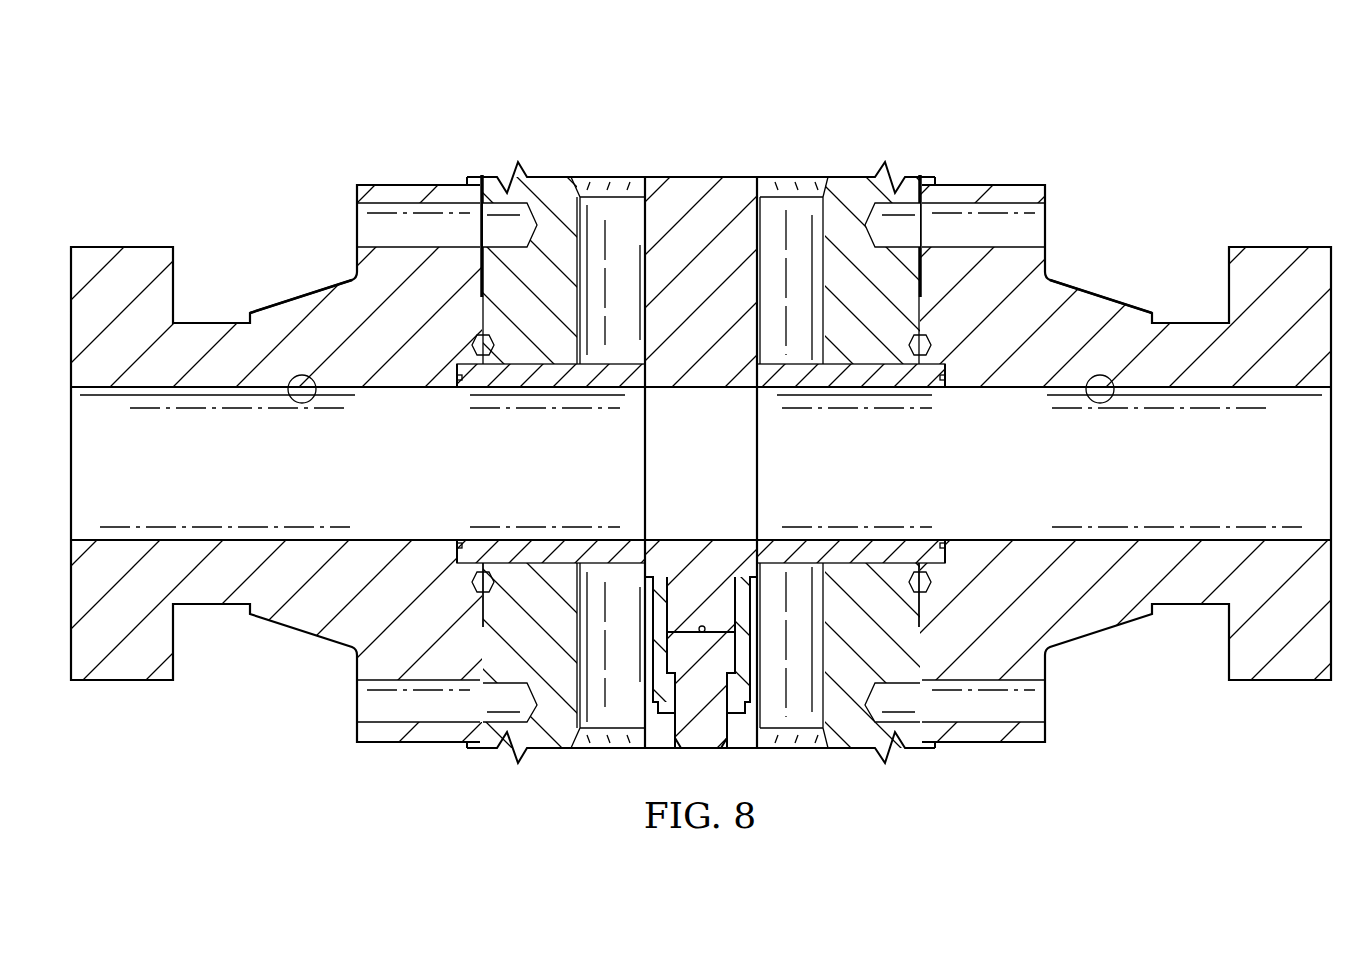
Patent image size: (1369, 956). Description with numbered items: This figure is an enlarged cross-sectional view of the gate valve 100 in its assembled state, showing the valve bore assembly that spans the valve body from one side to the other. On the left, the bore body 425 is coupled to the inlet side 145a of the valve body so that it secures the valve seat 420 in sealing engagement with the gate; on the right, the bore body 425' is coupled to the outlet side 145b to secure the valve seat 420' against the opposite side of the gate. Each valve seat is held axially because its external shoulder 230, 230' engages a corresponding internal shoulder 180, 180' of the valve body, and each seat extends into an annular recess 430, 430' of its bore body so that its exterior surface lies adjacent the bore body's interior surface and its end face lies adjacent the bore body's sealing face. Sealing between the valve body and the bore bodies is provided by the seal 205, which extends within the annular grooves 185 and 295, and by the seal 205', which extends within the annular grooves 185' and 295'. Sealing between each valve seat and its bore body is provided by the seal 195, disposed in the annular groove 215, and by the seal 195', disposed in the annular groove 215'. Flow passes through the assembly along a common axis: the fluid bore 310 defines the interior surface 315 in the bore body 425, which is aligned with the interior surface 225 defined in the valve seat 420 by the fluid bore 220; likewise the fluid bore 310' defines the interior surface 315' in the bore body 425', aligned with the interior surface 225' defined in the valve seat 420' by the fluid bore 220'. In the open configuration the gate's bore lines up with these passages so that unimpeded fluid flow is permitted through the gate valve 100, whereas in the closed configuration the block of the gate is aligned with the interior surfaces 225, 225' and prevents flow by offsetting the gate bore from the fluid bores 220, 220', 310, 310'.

The gate valve 100 is at (434, 104).
The inlet side 145a is at (472, 261).
The outlet side 145b is at (932, 275).
The internal shoulder 180 is at (551, 402).
The internal shoulder 180' is at (851, 402).
The annular groove 185 is at (510, 604).
The annular groove 185' is at (891, 604).
The seal 195 is at (412, 396).
The seal 195' is at (991, 396).
The seal 205 is at (443, 339).
The seal 205' is at (961, 339).
The annular groove 215 is at (414, 531).
The annular groove 215' is at (990, 531).
The fluid bore 220 is at (547, 461).
The fluid bore 220' is at (854, 461).
The interior surface 225 is at (551, 521).
The interior surface 225' is at (851, 521).
The external shoulder 230 is at (608, 462).
The external shoulder 230' is at (794, 462).
The annular groove 295 is at (438, 587).
The annular groove 295' is at (966, 587).
The fluid bore 310 is at (276, 463).
The fluid bore 310' is at (1125, 463).
The interior surface 315 is at (305, 360).
The interior surface 315' is at (1107, 360).
The valve seat 420 is at (556, 462).
The valve seat 420' is at (846, 462).
The bore body 425 is at (299, 271).
The bore body 425' is at (1101, 271).
The annular recess 430 is at (500, 518).
The annular recess 430' is at (902, 518).